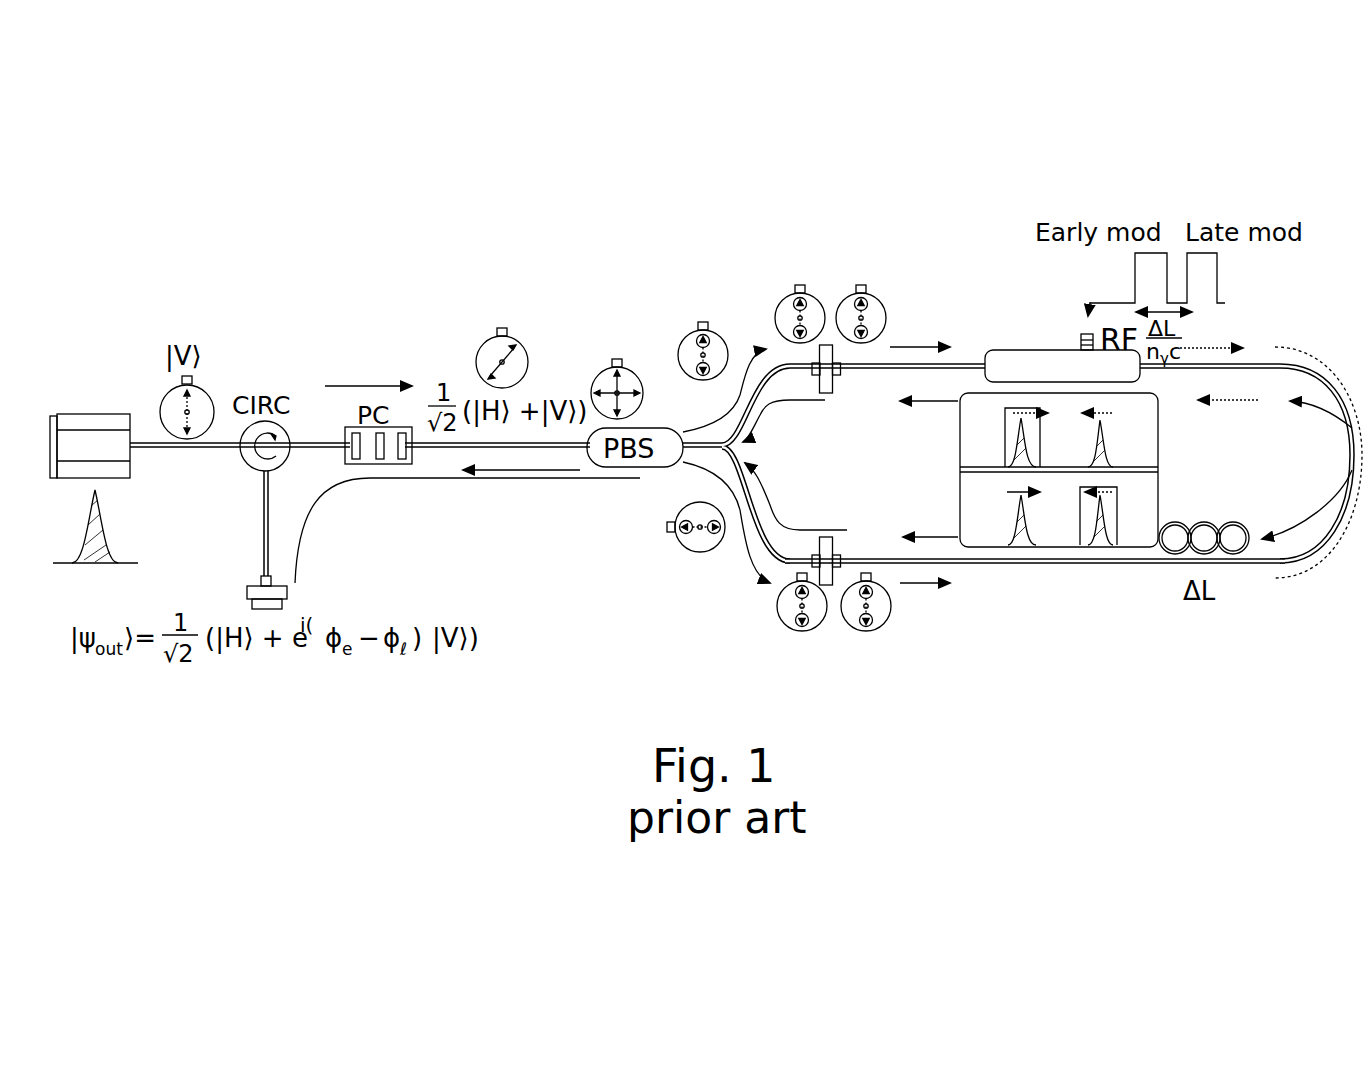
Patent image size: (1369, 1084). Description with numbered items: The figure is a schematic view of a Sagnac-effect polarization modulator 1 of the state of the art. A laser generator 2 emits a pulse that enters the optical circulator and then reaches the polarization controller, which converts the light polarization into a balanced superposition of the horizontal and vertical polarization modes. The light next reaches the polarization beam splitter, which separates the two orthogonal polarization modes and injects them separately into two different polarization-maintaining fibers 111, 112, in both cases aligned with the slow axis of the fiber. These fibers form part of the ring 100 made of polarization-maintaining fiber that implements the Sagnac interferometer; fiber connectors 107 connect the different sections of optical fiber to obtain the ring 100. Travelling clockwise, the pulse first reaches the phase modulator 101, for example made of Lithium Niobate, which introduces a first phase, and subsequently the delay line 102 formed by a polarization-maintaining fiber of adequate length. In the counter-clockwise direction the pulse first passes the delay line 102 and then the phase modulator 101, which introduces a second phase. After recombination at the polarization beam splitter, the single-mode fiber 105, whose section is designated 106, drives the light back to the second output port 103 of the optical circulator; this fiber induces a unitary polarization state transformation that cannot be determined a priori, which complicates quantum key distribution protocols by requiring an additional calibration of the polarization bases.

The polarization modulator 1 is at (558, 226).
The laser generator 2 is at (123, 445).
The ring 100 is at (936, 516).
The phase modulator 101 is at (1047, 348).
The delay line 102 is at (1058, 566).
The second output port 103 is at (262, 477).
The single-mode fiber 105 is at (432, 452).
The section of the single-mode fiber 106 is at (520, 335).
The fiber connectors 107 is at (828, 345).
The polarization-maintaining fiber 111 is at (700, 327).
The polarization-maintaining fiber 112 is at (700, 553).